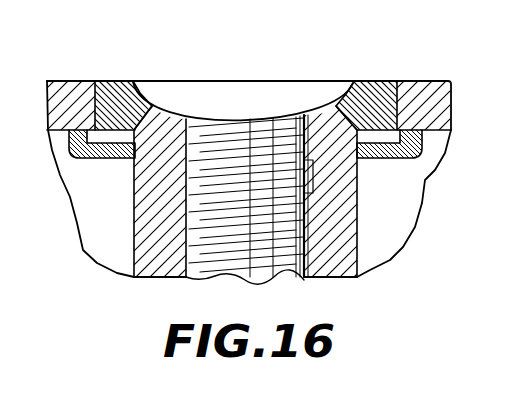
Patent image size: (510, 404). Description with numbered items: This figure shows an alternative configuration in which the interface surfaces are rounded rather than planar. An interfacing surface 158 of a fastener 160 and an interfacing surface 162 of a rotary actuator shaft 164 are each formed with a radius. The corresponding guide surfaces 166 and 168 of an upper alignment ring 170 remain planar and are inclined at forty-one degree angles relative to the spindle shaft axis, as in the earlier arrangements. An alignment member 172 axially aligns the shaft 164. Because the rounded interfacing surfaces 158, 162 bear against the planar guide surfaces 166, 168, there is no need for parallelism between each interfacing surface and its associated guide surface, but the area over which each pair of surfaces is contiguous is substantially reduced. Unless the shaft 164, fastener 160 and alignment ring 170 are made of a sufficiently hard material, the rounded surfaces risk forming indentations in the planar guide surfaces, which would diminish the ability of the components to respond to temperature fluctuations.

The interfacing surface 158 is at (130, 81).
The fastener 160 is at (249, 95).
The interfacing surface 162 is at (377, 63).
The rotary actuator shaft 164 is at (348, 204).
The guide surface 166 is at (153, 106).
The guide surface 168 is at (190, 148).
The upper alignment ring 170 is at (108, 87).
The alignment member 172 is at (103, 157).